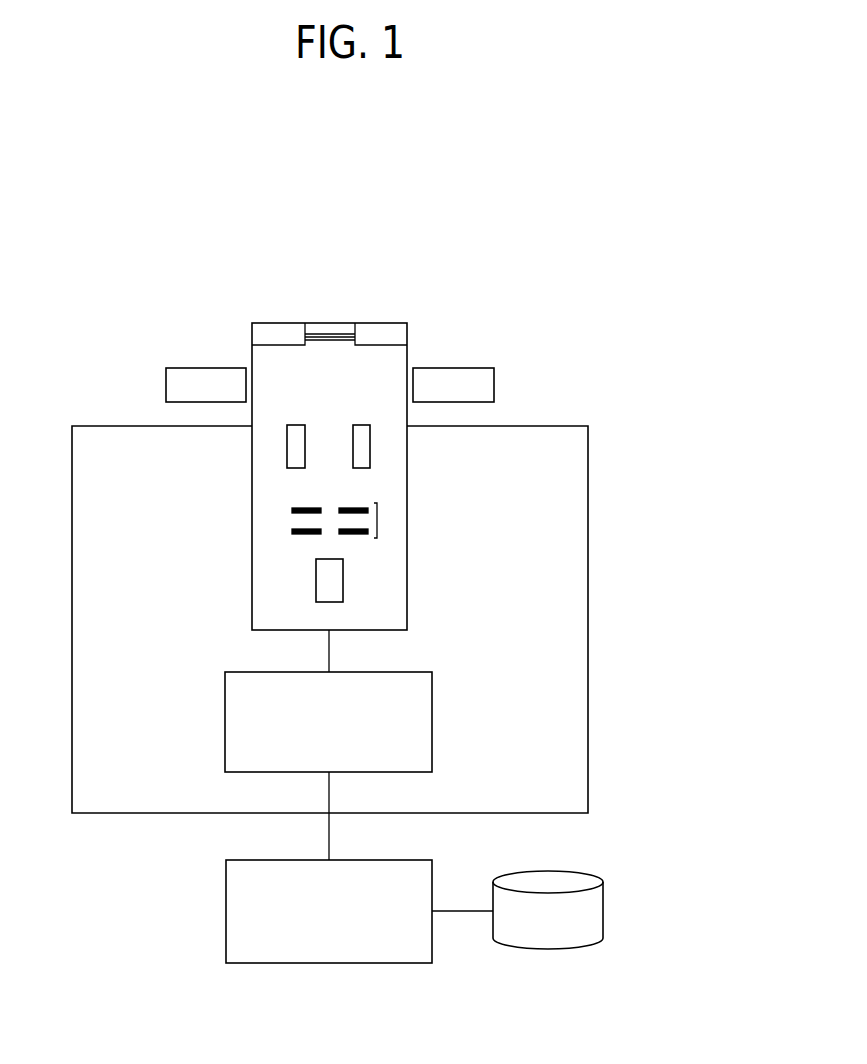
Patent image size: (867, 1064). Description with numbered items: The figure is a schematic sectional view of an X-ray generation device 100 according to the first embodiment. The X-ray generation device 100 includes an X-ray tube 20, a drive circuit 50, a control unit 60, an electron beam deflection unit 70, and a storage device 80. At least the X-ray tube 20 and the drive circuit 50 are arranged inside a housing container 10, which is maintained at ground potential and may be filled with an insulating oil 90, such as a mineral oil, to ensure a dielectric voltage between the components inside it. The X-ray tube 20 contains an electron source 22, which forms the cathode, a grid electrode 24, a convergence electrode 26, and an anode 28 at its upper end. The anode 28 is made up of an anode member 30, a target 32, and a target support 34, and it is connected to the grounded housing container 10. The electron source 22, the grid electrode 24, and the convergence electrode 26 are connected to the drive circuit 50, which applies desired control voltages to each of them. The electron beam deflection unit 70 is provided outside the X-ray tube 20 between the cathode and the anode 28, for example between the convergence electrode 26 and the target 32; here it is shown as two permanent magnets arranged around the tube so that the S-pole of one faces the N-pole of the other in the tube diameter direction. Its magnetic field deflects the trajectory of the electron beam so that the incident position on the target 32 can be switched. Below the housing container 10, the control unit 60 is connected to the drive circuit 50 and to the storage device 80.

The X-ray generation device 100 is at (592, 329).
The housing container 10 is at (588, 757).
The insulating oil 90 is at (112, 786).
The X-ray tube 20 is at (252, 532).
The anode 28 is at (328, 265).
The anode member 30 is at (272, 332).
The target 32 is at (332, 299).
The target support 34 is at (315, 332).
The convergence electrode 26 is at (370, 450).
The grid electrode 24 is at (378, 520).
The electron source 22 is at (343, 580).
The electron beam deflection unit 70 is at (166, 385).
The drive circuit 50 is at (432, 728).
The control unit 60 is at (226, 912).
The storage device 80 is at (603, 915).